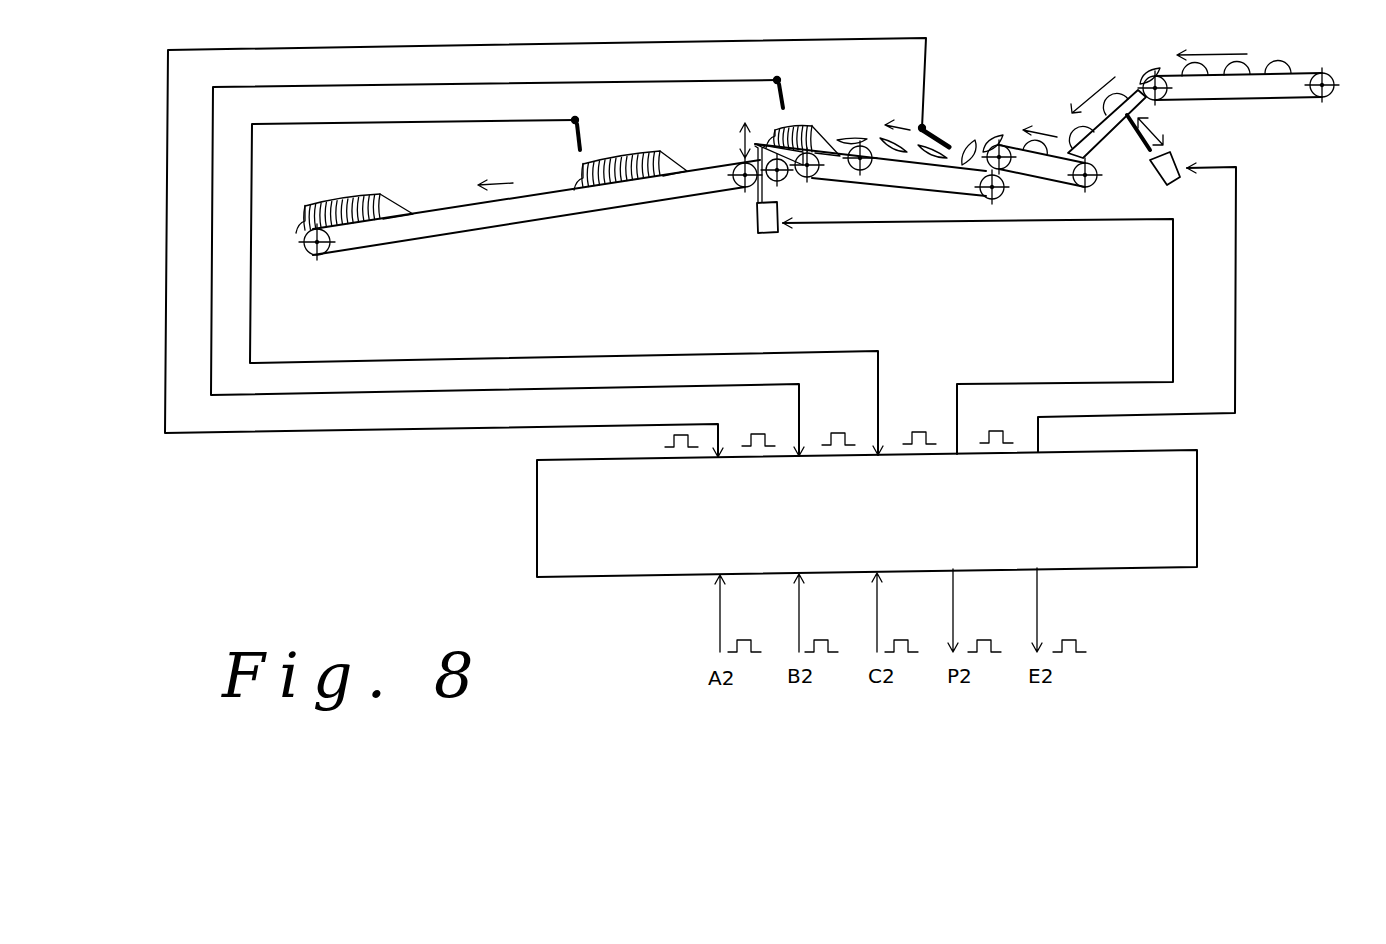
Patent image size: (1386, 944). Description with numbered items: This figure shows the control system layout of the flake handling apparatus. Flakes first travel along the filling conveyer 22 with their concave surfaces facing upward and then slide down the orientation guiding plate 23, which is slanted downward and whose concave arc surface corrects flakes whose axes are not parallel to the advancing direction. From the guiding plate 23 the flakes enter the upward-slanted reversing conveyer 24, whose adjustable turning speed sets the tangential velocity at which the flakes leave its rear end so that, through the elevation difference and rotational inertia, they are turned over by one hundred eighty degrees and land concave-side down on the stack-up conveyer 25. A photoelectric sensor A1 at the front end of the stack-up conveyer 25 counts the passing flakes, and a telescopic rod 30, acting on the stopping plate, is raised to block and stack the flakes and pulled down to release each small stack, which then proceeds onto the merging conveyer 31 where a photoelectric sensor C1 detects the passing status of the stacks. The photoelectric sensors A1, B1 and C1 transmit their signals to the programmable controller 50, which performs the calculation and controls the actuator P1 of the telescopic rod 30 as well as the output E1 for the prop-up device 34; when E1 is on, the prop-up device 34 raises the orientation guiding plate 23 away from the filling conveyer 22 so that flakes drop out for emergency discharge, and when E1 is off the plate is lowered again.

The filling conveyer 22 is at (1275, 102).
The orientation guiding plate 23 is at (1102, 140).
The reversing conveyer 24 is at (1045, 180).
The stack-up conveyer 25 is at (908, 193).
The telescopic rod 30 is at (757, 193).
The merging conveyer 31 is at (588, 213).
The prop-up device 34 is at (1137, 142).
The programmable controller 50 is at (1175, 492).
The photoelectric sensor A1 is at (939, 122).
The photoelectric sensor B1 is at (795, 88).
The photoelectric sensor C1 is at (593, 130).
The actuator of the telescopic rod P1 is at (782, 213).
The prop-up device control signal E1 is at (1176, 159).